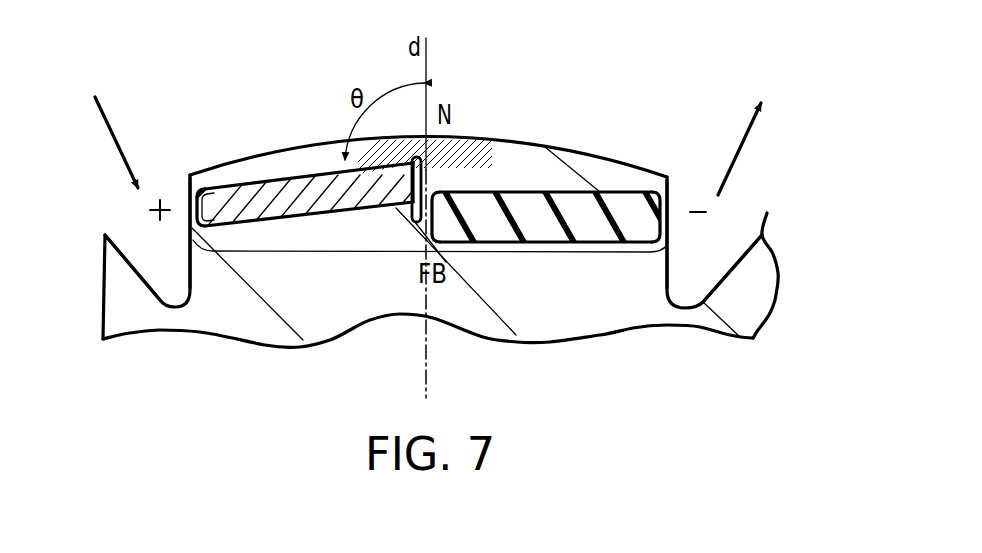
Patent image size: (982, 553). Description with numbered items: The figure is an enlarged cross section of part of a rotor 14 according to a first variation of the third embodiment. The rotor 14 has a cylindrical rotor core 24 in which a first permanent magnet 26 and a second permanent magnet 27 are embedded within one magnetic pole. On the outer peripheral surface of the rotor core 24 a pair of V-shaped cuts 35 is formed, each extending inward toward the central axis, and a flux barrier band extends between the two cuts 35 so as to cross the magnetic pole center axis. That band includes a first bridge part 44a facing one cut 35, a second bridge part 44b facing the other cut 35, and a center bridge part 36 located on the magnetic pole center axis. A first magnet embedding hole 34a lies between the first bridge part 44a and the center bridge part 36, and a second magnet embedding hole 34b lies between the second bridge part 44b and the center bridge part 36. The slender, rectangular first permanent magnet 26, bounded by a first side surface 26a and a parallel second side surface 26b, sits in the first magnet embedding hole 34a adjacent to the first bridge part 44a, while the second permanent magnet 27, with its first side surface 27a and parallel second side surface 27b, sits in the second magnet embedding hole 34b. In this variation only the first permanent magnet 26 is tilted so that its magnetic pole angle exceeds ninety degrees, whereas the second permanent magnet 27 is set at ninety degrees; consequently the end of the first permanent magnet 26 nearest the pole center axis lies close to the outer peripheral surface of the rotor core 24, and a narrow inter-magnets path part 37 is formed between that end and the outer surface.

The rotor 14 is at (279, 91).
The rotor core 24 is at (545, 323).
The first permanent magnet 26 is at (269, 205).
The first side surface of first permanent magnet 26a is at (301, 176).
The second side surface of first permanent magnet 26b is at (338, 216).
The second permanent magnet 27 is at (603, 207).
The first side surface of second permanent magnet 27a is at (639, 191).
The second side surface of second permanent magnet 27b is at (592, 245).
The first magnet embedding hole 34a is at (234, 205).
The second magnet embedding hole 34b is at (523, 200).
The cut 35 is at (140, 240).
The center bridge part 36 is at (411, 248).
The inter-magnets path part 37 is at (475, 139).
The first bridge part 44a is at (190, 207).
The second bridge part 44b is at (668, 213).